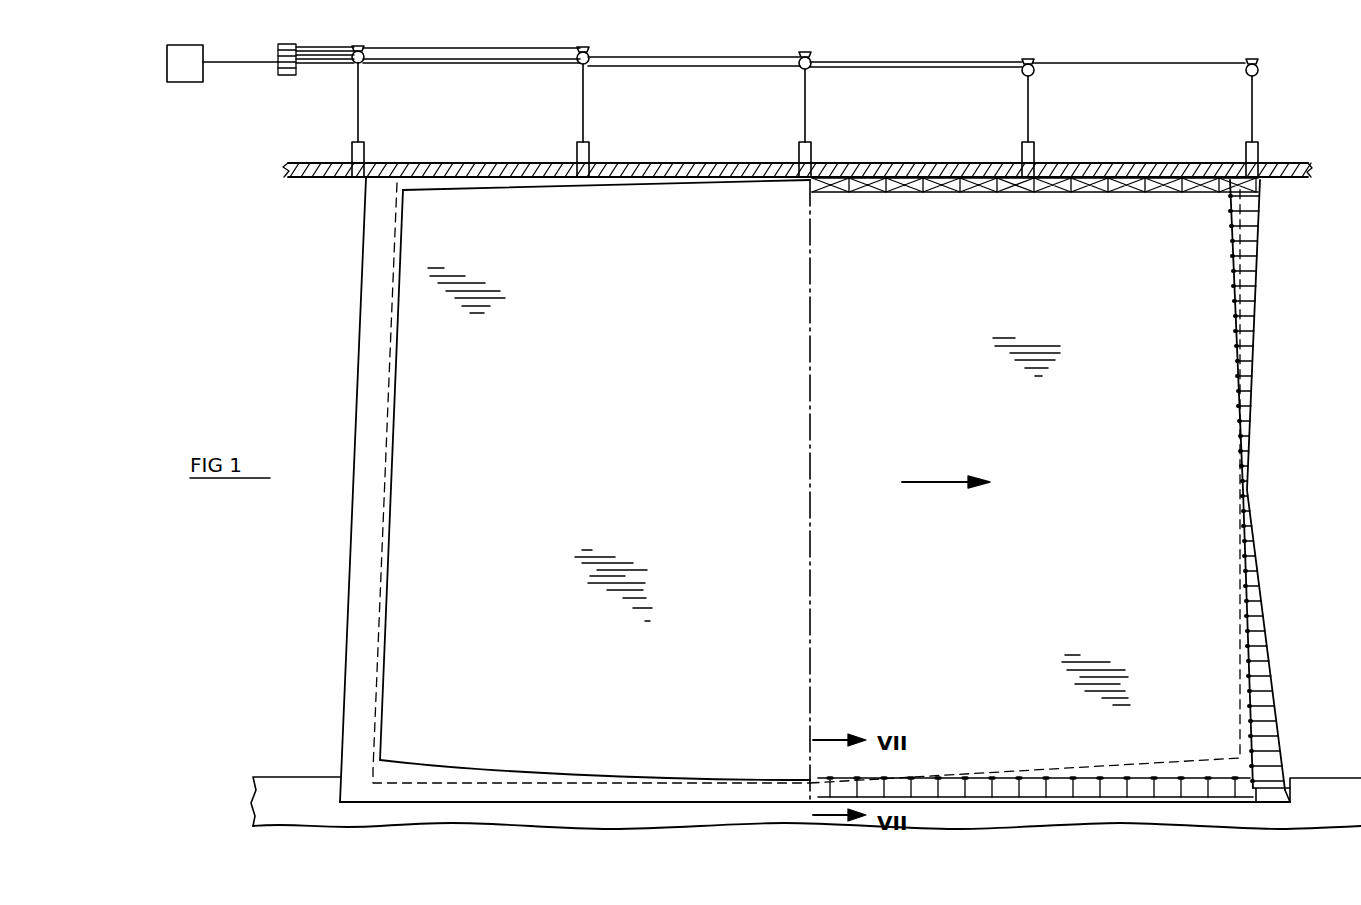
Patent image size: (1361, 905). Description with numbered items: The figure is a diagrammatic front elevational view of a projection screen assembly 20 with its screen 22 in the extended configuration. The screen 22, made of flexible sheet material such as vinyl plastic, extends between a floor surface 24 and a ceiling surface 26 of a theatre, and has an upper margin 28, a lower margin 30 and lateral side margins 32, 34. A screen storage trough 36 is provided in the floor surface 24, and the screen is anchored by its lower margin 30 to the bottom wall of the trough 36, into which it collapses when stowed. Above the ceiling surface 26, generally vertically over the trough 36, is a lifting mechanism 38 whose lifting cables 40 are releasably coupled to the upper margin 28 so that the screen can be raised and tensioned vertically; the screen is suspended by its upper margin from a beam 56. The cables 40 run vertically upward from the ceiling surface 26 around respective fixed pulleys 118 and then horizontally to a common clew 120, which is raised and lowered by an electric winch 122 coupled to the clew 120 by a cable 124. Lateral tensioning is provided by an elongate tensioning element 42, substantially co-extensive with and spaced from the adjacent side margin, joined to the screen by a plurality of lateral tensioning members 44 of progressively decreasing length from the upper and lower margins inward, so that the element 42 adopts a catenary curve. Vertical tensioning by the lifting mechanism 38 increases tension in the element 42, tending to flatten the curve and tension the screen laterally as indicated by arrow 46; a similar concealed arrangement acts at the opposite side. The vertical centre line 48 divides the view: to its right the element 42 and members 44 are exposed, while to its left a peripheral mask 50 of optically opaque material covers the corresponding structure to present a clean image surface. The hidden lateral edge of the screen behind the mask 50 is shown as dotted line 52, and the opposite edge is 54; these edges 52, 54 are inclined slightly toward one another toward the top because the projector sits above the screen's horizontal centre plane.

The projection screen assembly 20 is at (1284, 145).
The screen 22 is at (1190, 387).
The floor surface 24 is at (1322, 777).
The ceiling surface 26 is at (1290, 181).
The upper margin 28 is at (428, 201).
The lower margin 30 is at (410, 748).
The lateral side margin 32 is at (416, 364).
The lateral side margin 34 is at (1198, 440).
The screen storage trough 36 is at (1292, 780).
The lifting mechanism 38 is at (440, 77).
The lifting cables 40 is at (1068, 101).
The elongate tensioning element 42 is at (1254, 238).
The lateral tensioning members 44 is at (1240, 295).
The arrow 46 is at (930, 480).
The vertical centre line 48 is at (812, 316).
The peripheral mask 50 is at (368, 420).
The lateral edge of the screen 52 is at (395, 273).
The lateral edge of the screen 54 is at (1256, 642).
The beam 56 is at (1063, 196).
The fixed pulleys 118 is at (1020, 73).
The clew 120 is at (290, 78).
The electric winch 122 is at (185, 70).
The cable 124 is at (232, 63).